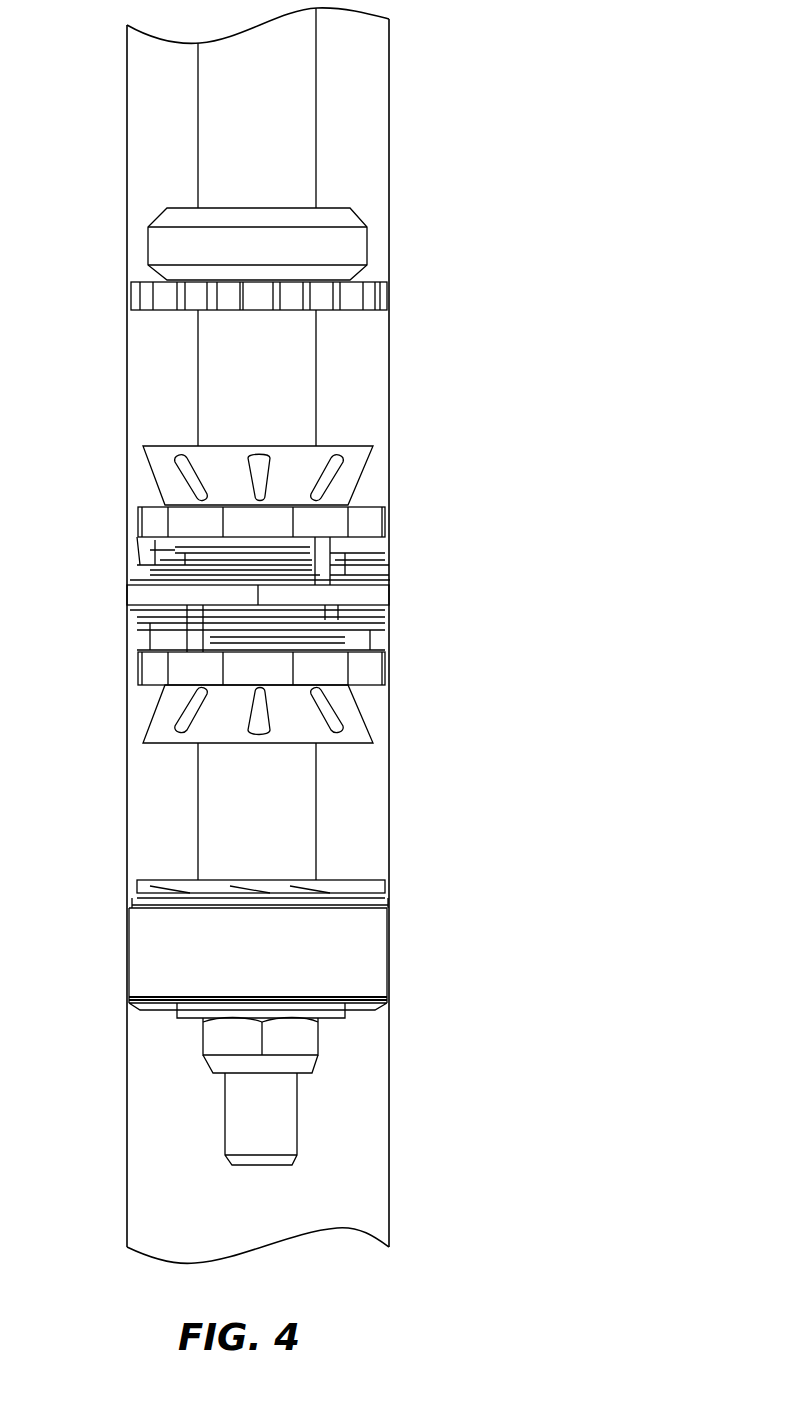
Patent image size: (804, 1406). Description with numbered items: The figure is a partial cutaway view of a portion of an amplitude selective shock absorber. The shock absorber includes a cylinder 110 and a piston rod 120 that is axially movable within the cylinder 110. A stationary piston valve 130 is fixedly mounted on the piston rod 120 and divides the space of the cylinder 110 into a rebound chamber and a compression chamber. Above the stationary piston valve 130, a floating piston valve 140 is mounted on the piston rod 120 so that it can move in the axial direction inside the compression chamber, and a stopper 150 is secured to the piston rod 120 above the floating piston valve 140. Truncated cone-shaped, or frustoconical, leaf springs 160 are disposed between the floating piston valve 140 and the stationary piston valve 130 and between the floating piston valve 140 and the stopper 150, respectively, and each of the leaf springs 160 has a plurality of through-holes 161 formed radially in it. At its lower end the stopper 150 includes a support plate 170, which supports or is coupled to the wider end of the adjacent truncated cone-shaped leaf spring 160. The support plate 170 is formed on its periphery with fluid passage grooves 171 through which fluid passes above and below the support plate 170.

The cylinder 110 is at (390, 390).
The piston rod 120 is at (305, 156).
The stationary piston valve 130 is at (385, 957).
The floating piston valve 140 is at (147, 500).
The stopper 150 is at (363, 243).
The truncated cone-shaped leaf spring 160 is at (249, 589).
The through-hole 161 is at (150, 468).
The support plate 170 is at (255, 279).
The fluid passage groove 171 is at (375, 297).